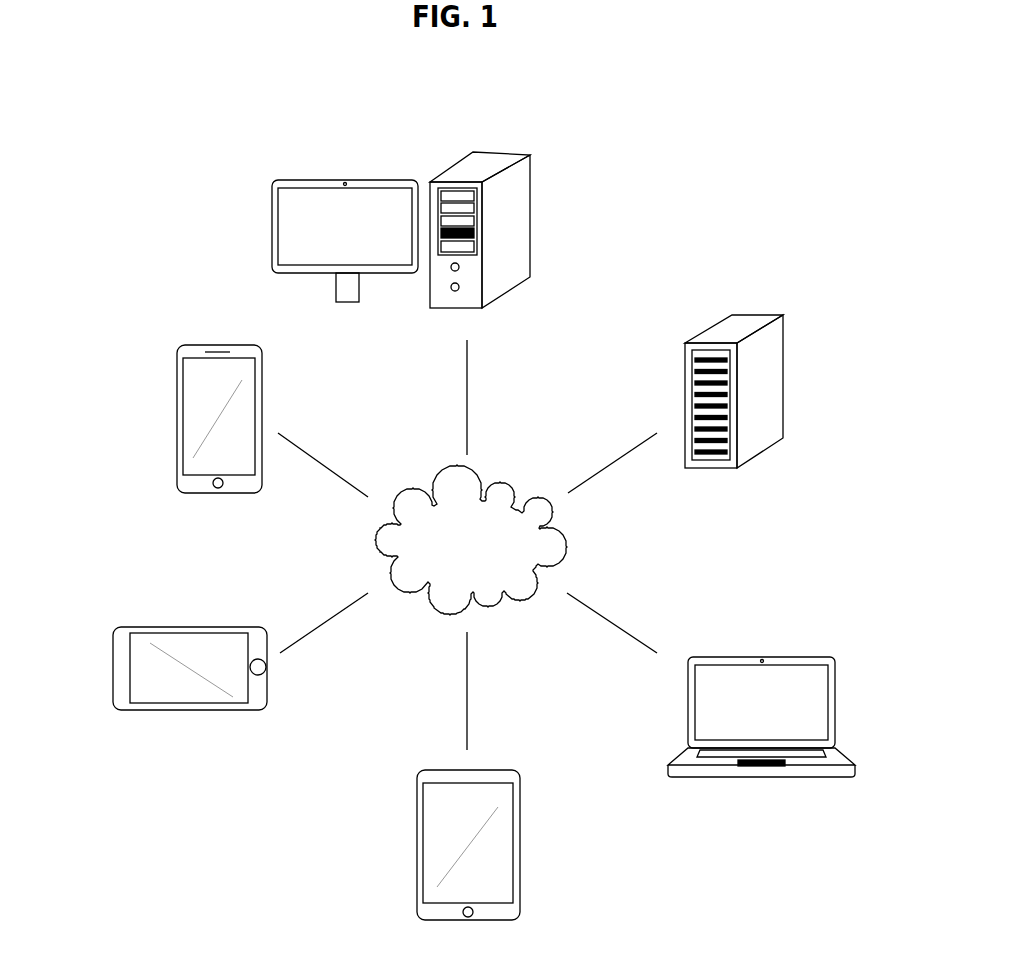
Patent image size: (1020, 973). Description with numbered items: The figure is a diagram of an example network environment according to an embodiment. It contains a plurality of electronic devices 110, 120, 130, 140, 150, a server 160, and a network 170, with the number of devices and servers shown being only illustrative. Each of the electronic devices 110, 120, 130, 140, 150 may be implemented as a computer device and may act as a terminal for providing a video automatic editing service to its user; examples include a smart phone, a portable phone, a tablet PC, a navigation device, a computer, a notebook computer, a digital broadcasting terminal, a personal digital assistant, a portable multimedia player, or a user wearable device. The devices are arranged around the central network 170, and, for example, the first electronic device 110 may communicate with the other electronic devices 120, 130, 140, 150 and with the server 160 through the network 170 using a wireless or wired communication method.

The first electronic device 110 is at (175, 408).
The electronic device 120 is at (112, 658).
The electronic device 130 is at (520, 830).
The electronic device 140 is at (835, 705).
The electronic device 150 is at (532, 248).
The server 160 is at (785, 408).
The network 170 is at (565, 543).